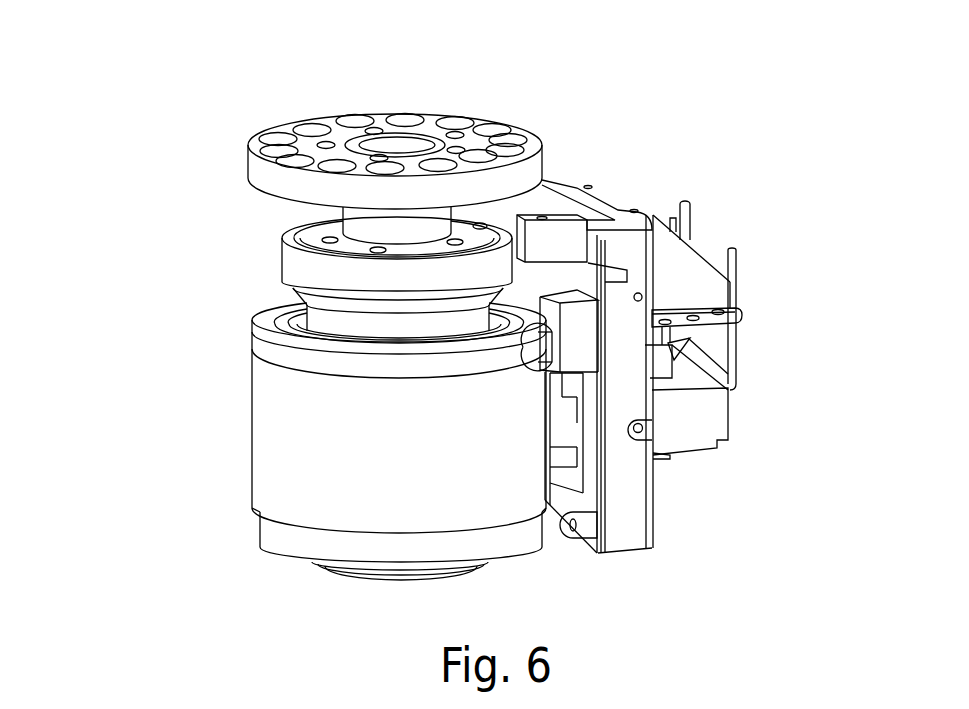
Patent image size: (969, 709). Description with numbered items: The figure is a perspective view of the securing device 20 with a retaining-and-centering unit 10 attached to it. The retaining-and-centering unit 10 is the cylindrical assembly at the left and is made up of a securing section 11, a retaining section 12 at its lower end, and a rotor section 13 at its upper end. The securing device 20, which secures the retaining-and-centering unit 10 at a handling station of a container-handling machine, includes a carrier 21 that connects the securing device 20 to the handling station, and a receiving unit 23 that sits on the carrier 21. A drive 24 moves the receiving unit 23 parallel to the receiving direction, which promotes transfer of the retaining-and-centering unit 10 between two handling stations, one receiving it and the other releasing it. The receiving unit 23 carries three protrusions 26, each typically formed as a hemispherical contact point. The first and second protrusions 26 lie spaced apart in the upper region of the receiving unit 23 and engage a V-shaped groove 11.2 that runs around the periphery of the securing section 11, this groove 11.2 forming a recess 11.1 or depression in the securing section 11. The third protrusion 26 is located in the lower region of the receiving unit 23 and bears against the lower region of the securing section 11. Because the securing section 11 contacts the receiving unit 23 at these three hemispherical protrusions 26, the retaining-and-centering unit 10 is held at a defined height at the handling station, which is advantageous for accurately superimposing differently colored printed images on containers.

The retaining-and-centering unit 10 is at (228, 445).
The securing section 11 is at (250, 480).
The recess 11.1 is at (256, 346).
The groove 11.2 is at (272, 332).
The retaining section 12 is at (374, 600).
The rotor section 13 is at (478, 120).
The securing device 20 is at (669, 371).
The carrier 21 is at (603, 210).
The receiving unit 23 is at (570, 322).
The drive 24 is at (690, 430).
The protrusions 26 is at (552, 527).